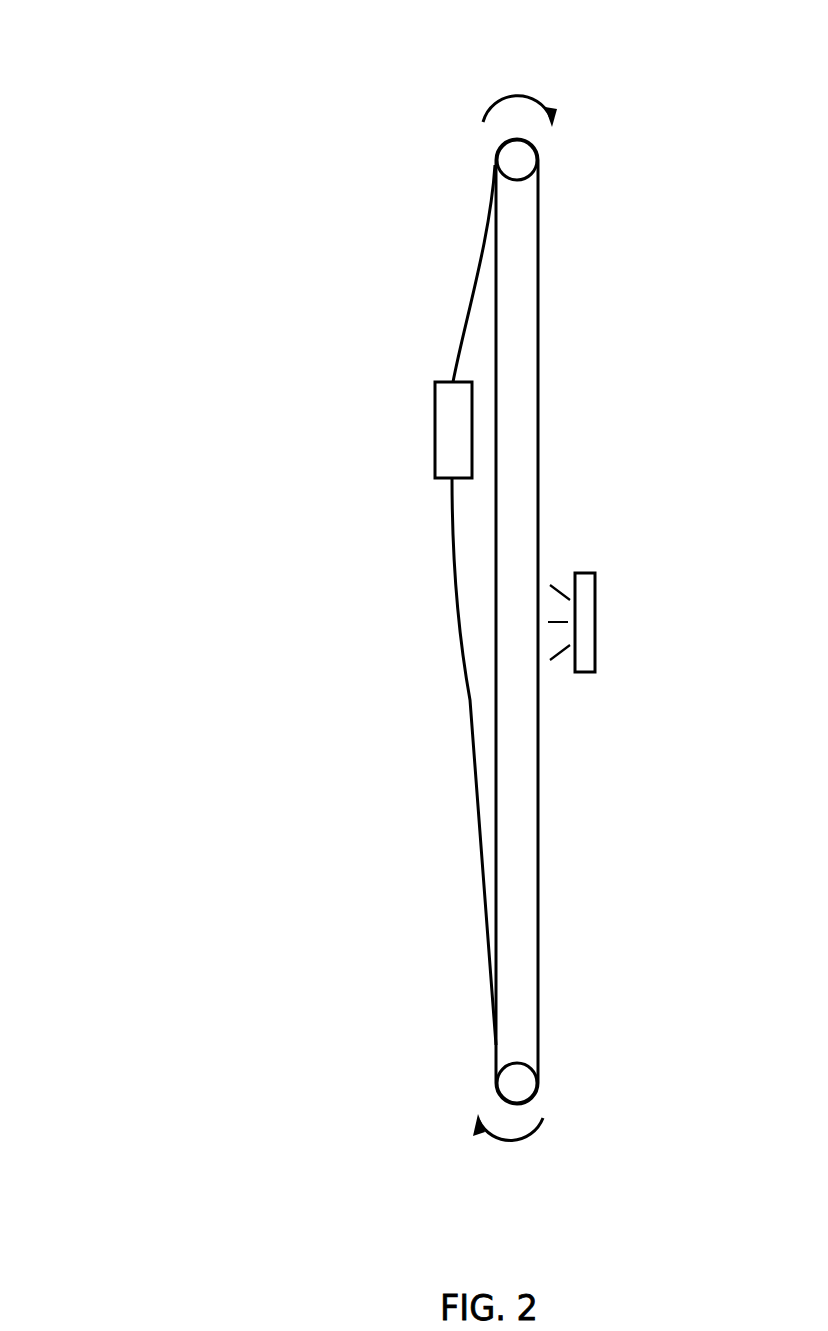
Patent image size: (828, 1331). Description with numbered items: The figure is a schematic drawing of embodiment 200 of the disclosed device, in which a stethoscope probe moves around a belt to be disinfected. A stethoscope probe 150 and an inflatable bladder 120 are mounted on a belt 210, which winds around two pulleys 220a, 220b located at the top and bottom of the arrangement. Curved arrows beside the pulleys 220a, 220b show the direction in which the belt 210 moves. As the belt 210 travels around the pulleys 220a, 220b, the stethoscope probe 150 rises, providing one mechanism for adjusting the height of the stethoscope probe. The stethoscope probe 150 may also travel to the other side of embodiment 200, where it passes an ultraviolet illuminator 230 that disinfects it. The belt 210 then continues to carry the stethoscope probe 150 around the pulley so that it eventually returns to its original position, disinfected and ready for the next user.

The embodiment 200 is at (136, 46).
The inflatable bladder 120 is at (457, 622).
The stethoscope probe 150 is at (435, 430).
The belt 210 is at (539, 866).
The pulley 220a is at (538, 152).
The pulley 220b is at (538, 1088).
The ultraviolet illuminator 230 is at (595, 612).